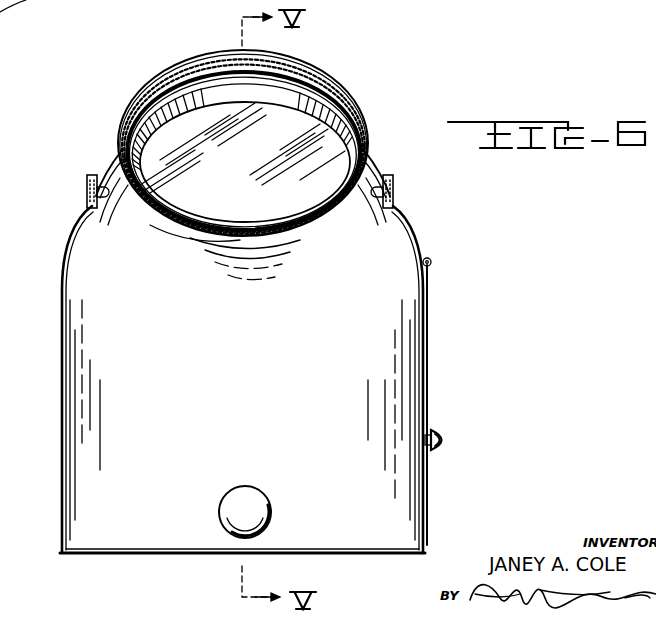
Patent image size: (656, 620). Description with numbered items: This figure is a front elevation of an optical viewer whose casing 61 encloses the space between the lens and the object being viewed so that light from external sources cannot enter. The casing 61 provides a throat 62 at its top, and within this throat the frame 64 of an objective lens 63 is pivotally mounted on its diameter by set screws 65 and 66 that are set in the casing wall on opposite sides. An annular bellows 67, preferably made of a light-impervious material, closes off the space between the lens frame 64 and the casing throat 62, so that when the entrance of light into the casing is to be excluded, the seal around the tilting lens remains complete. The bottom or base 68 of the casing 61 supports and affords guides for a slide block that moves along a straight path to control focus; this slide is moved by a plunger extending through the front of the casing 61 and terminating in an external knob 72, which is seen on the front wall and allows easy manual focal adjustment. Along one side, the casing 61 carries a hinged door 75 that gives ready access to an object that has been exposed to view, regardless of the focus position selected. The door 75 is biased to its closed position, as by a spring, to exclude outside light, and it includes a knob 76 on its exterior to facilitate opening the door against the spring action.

The casing 61 is at (62, 365).
The throat 62 is at (190, 227).
The objective lens 63 is at (310, 173).
The frame 64 is at (310, 145).
The set screw 65 is at (393, 178).
The set screw 66 is at (88, 177).
The annular bellows 67 is at (184, 80).
The base 68 is at (143, 555).
The knob 72 is at (266, 496).
The hinged door 75 is at (428, 358).
The knob 76 is at (452, 441).